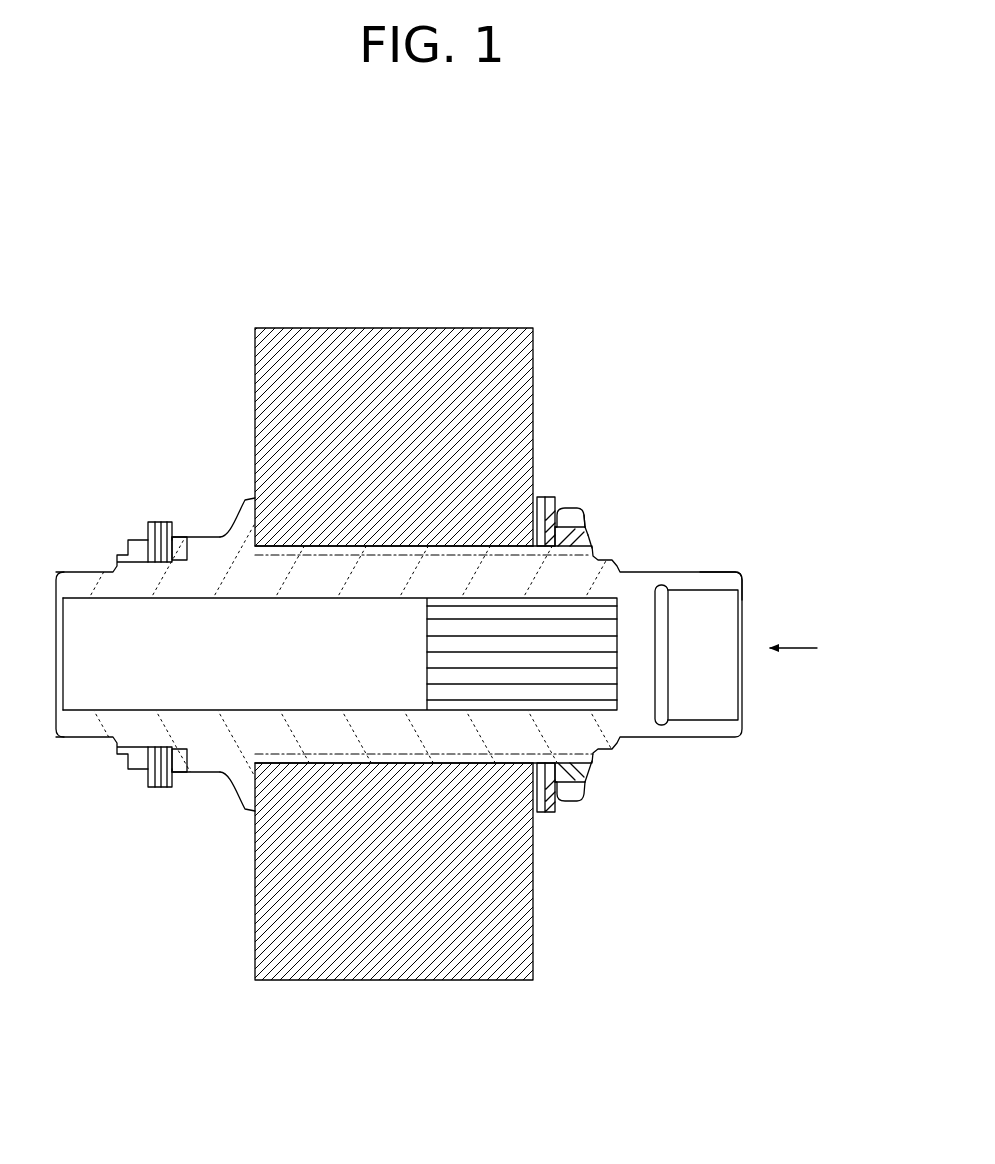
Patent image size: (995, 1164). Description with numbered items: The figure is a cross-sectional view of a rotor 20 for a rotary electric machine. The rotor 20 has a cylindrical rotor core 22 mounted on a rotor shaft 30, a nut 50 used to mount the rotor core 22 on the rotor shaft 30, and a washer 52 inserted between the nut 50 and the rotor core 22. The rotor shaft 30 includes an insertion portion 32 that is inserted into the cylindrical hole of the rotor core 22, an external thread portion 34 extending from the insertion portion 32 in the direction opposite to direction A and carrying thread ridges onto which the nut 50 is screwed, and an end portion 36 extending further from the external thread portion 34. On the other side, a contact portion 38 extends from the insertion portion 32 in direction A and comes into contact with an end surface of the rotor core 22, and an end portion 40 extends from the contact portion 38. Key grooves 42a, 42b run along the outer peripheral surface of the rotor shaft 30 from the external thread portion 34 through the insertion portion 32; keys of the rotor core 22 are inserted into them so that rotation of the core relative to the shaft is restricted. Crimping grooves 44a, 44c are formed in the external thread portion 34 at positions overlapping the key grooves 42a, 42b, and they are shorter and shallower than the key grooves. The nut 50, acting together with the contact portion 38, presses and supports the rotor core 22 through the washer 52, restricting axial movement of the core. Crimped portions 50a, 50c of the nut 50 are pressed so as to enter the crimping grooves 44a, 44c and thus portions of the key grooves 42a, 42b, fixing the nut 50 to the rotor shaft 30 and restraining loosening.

The rotor 20 is at (688, 226).
The rotor core 22 is at (453, 328).
The rotor shaft 30 is at (700, 737).
The insertion portion 32 is at (318, 546).
The external thread portion 34 is at (567, 508).
The end portion 36 is at (690, 572).
The contact portion 38 is at (250, 498).
The end portion 40 is at (195, 533).
The key groove 42a is at (587, 523).
The key groove 42b is at (557, 812).
The crimping groove 44a is at (593, 550).
The crimping groove 44c is at (590, 760).
The nut 50 is at (593, 527).
The crimped portion 50a is at (590, 541).
The crimped portion 50c is at (590, 765).
The washer 52 is at (545, 497).